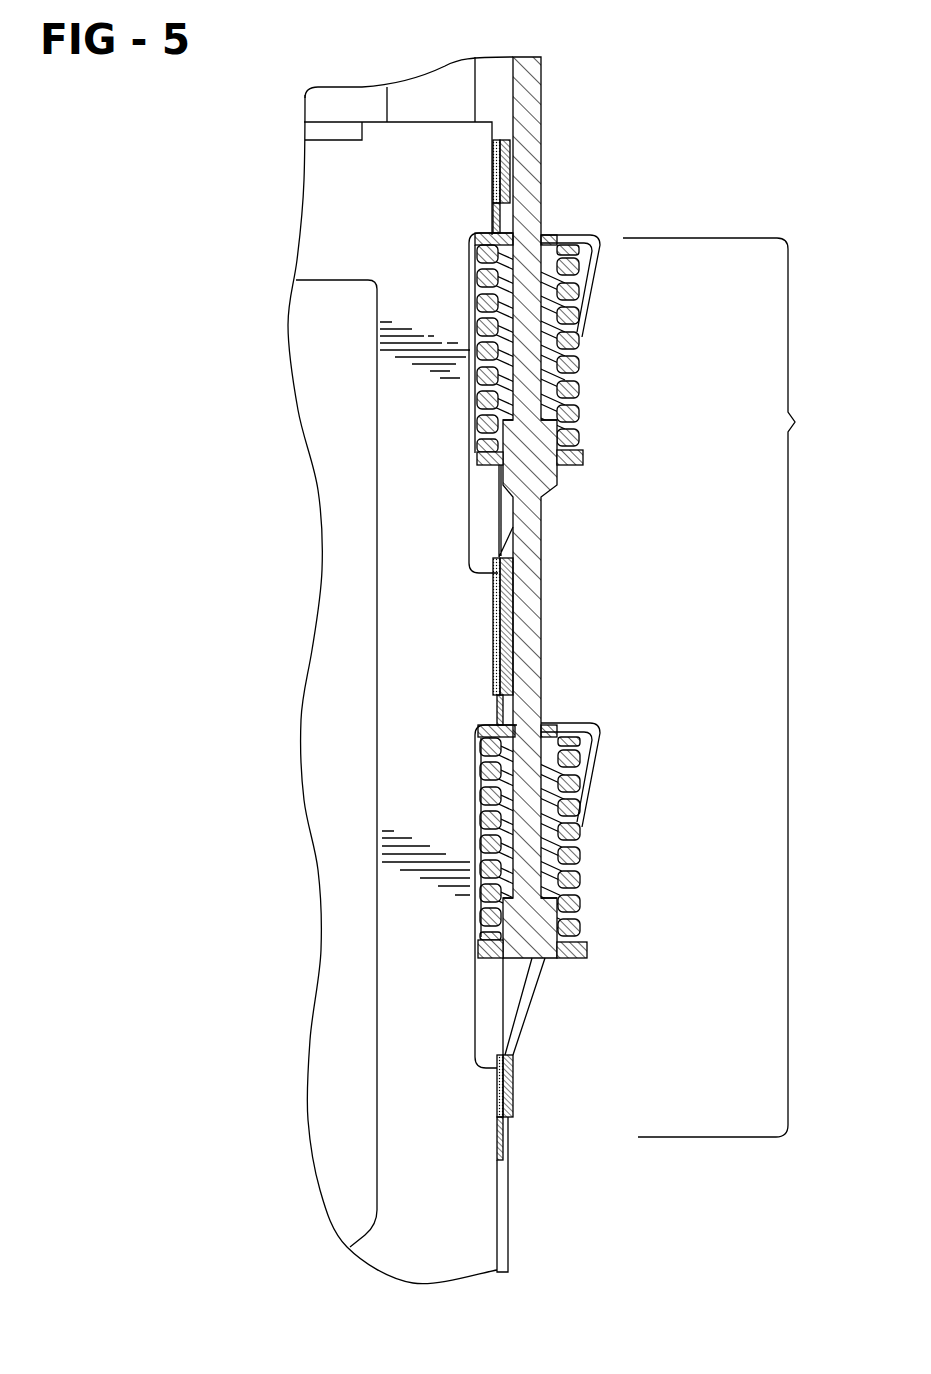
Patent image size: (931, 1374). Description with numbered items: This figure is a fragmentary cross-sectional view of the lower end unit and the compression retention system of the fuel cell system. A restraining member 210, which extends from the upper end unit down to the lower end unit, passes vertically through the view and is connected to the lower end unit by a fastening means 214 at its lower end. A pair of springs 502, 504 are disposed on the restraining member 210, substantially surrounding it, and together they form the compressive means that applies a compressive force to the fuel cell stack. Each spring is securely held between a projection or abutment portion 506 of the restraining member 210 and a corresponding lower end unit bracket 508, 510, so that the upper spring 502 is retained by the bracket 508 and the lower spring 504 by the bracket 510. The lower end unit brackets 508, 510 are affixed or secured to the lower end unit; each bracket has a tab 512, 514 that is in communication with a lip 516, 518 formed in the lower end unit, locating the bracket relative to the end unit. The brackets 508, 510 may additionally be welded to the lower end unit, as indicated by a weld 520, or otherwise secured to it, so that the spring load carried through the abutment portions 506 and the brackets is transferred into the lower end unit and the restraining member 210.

The restraining member 210 is at (535, 535).
The fastening means 214 is at (733, 687).
The spring 502 is at (577, 391).
The spring 504 is at (580, 858).
The abutment portion 506 is at (580, 467).
The lower end unit bracket 508 is at (590, 242).
The lower end unit bracket 510 is at (597, 740).
The tab 512 is at (472, 237).
The tab 514 is at (493, 723).
The lip 516 is at (488, 500).
The lip 518 is at (480, 758).
The weld 520 is at (492, 173).